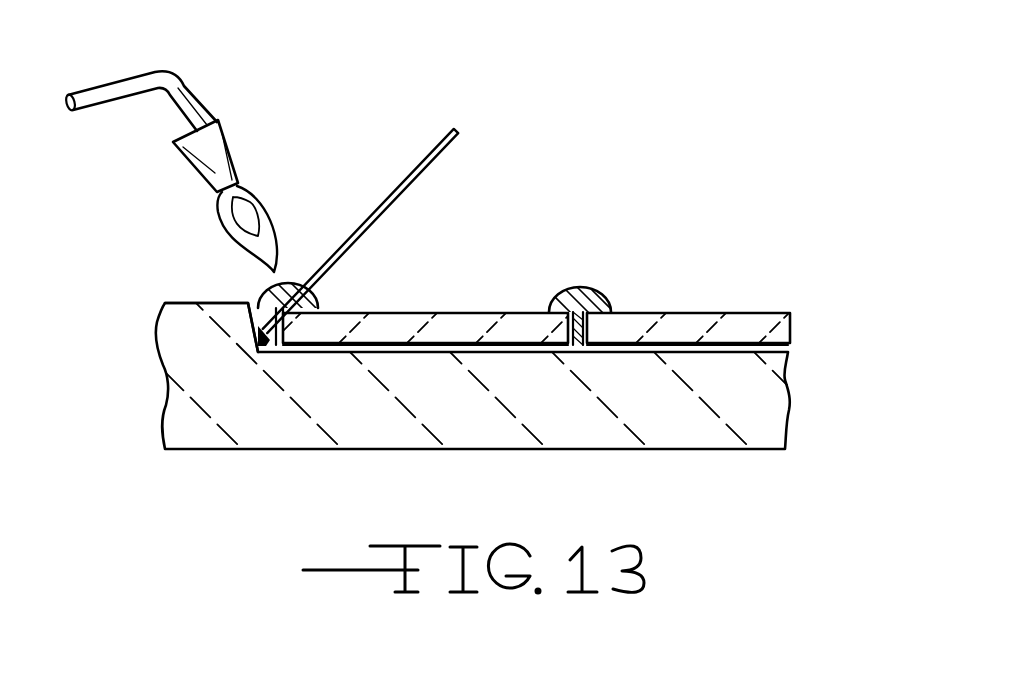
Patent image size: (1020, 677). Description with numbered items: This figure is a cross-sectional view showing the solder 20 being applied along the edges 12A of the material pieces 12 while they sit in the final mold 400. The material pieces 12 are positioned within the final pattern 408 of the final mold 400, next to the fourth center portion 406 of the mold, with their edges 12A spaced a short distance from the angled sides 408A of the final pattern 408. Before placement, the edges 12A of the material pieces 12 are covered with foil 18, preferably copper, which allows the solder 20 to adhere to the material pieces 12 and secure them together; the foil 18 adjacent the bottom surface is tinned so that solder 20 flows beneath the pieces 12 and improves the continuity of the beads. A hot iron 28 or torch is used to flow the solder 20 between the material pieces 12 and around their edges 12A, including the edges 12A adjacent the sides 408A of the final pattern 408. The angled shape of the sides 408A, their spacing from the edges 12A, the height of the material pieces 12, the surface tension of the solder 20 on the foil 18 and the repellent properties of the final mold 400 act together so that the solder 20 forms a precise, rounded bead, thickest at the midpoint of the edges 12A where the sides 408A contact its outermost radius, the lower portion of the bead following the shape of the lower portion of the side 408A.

The material pieces 12 is at (787, 327).
The edges of the material pieces 12A is at (610, 340).
The foil 18 is at (612, 304).
The solder 20 is at (446, 131).
The hot iron 28 is at (172, 77).
The final mold 400 is at (193, 440).
The fourth center portion 406 is at (185, 303).
The final pattern 408 is at (457, 372).
The sides of the final pattern 408A is at (272, 353).